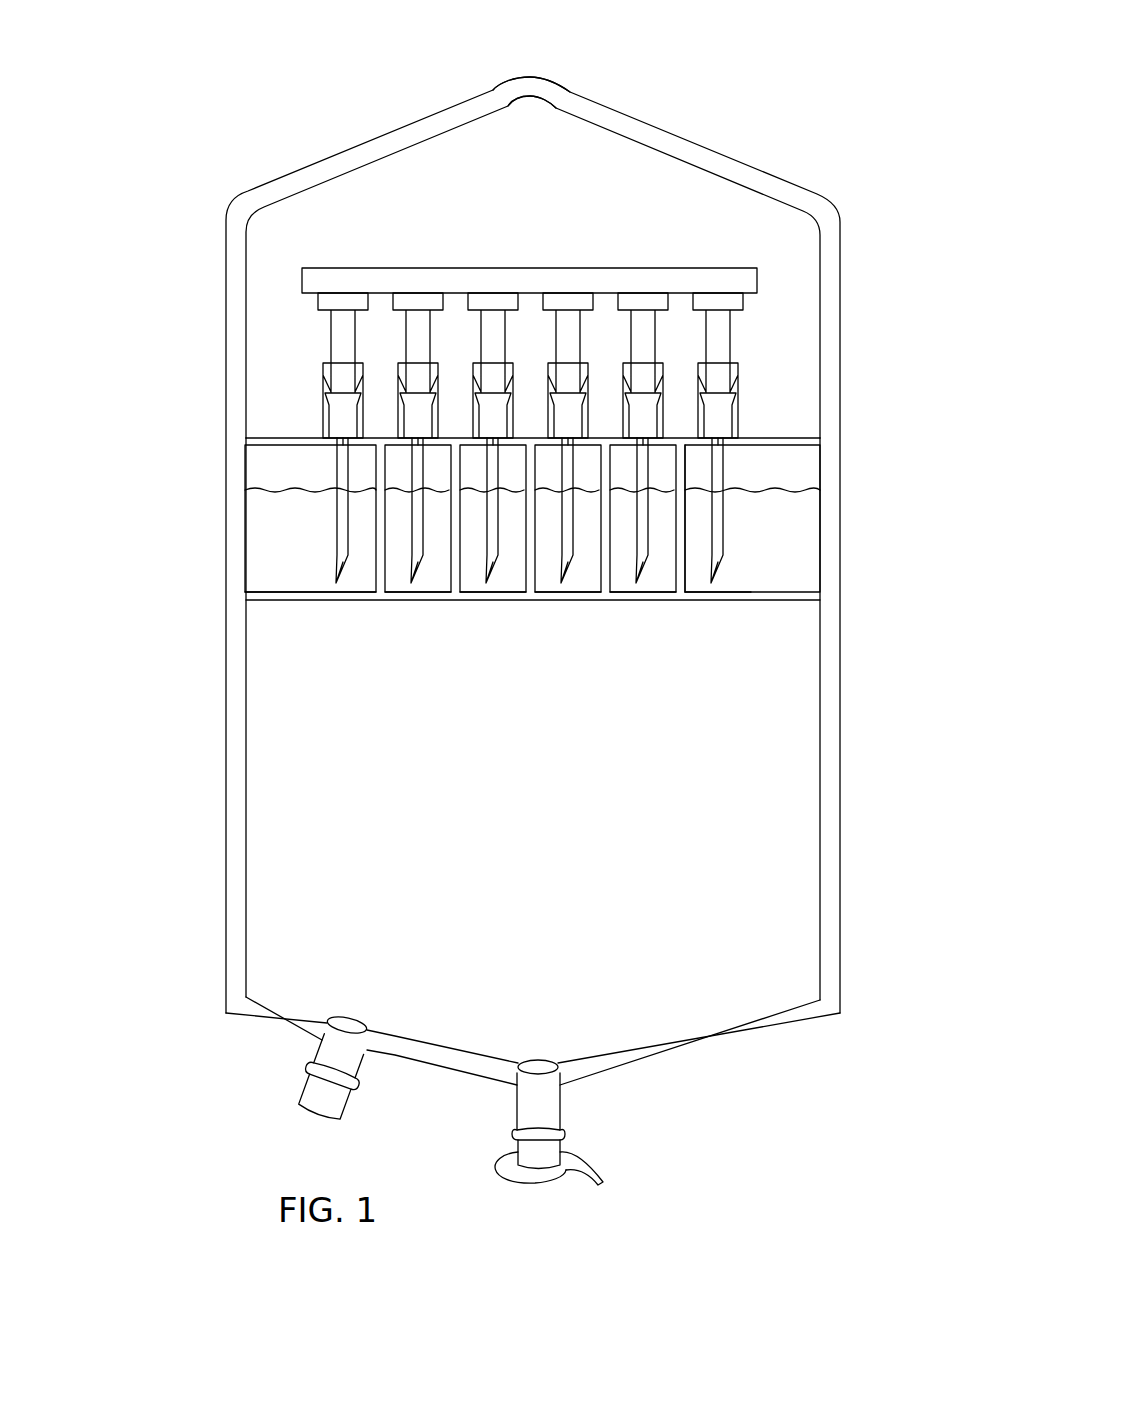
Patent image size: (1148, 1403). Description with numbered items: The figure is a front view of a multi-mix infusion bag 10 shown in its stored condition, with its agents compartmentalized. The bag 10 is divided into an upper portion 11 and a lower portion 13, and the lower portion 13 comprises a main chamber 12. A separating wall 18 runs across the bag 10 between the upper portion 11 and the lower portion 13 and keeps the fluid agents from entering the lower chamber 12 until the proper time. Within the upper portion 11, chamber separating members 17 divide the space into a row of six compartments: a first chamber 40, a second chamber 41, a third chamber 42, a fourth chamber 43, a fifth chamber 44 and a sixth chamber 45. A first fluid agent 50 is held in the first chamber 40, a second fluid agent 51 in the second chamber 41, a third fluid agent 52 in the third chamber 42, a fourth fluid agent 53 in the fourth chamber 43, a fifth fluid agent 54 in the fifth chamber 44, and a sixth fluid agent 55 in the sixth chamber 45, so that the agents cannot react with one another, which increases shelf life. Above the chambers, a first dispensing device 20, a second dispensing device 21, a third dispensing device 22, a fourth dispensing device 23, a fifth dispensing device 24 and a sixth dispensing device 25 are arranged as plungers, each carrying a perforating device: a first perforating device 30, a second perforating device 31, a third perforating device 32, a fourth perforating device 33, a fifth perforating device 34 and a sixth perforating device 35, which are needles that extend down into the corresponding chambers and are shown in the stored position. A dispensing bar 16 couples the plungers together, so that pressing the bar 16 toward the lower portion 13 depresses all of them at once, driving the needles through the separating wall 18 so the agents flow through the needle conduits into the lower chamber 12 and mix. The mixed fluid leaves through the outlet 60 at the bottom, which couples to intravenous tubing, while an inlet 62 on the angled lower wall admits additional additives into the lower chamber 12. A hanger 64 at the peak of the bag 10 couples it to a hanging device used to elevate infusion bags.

The multi-mix infusion bag 10 is at (750, 104).
The upper portion 11 is at (217, 301).
The main chamber 12 is at (700, 796).
The lower portion 13 is at (206, 721).
The dispensing bar 16 is at (732, 270).
The chamber separating member 17 is at (683, 521).
The separating wall 18 is at (768, 596).
The first dispensing device 20 is at (323, 324).
The second dispensing device 21 is at (398, 324).
The third dispensing device 22 is at (473, 324).
The fourth dispensing device 23 is at (548, 324).
The fifth dispensing device 24 is at (623, 324).
The sixth dispensing device 25 is at (698, 324).
The first perforating device 30 is at (329, 540).
The second perforating device 31 is at (406, 540).
The third perforating device 32 is at (481, 540).
The fourth perforating device 33 is at (556, 540).
The fifth perforating device 34 is at (631, 540).
The sixth perforating device 35 is at (706, 540).
The first chamber 40 is at (262, 470).
The second chamber 41 is at (394, 590).
The third chamber 42 is at (469, 590).
The fourth chamber 43 is at (544, 590).
The fifth chamber 44 is at (619, 590).
The sixth chamber 45 is at (805, 465).
The first fluid agent 50 is at (310, 627).
The second fluid agent 51 is at (405, 625).
The third fluid agent 52 is at (480, 625).
The fourth fluid agent 53 is at (555, 625).
The fifth fluid agent 54 is at (630, 625).
The sixth fluid agent 55 is at (705, 625).
The outlet 60 is at (547, 1105).
The inlet 62 is at (318, 1099).
The hanger 64 is at (535, 88).